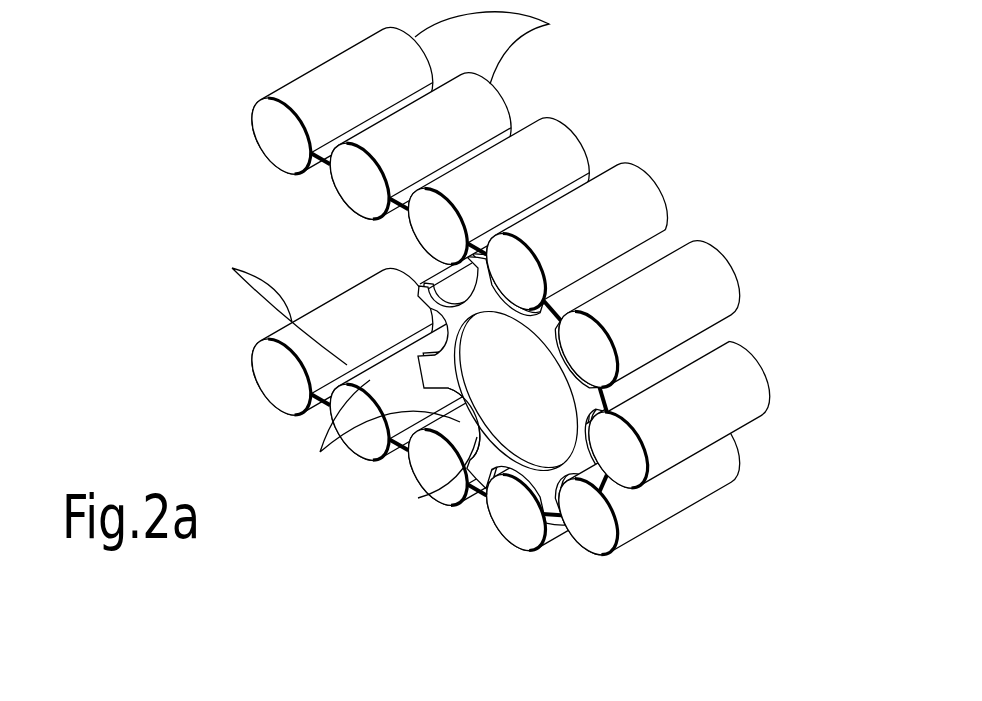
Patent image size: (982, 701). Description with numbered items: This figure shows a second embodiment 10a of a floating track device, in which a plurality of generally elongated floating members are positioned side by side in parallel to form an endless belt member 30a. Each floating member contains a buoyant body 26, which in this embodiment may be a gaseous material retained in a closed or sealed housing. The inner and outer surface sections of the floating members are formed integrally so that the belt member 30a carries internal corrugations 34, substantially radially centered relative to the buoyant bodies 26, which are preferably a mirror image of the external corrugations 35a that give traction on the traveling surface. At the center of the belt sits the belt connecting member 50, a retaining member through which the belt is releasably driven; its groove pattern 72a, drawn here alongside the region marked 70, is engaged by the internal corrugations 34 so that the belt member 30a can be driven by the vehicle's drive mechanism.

The track device (second embodiment) 10a is at (524, 297).
The belt member 30a is at (803, 237).
The buoyant body 26 is at (357, 183).
The internal corrugations 34 is at (232, 268).
The external corrugations 35a is at (549, 24).
The belt connecting member 50 is at (478, 478).
The notch 70 is at (445, 461).
The groove pattern 72a is at (320, 452).